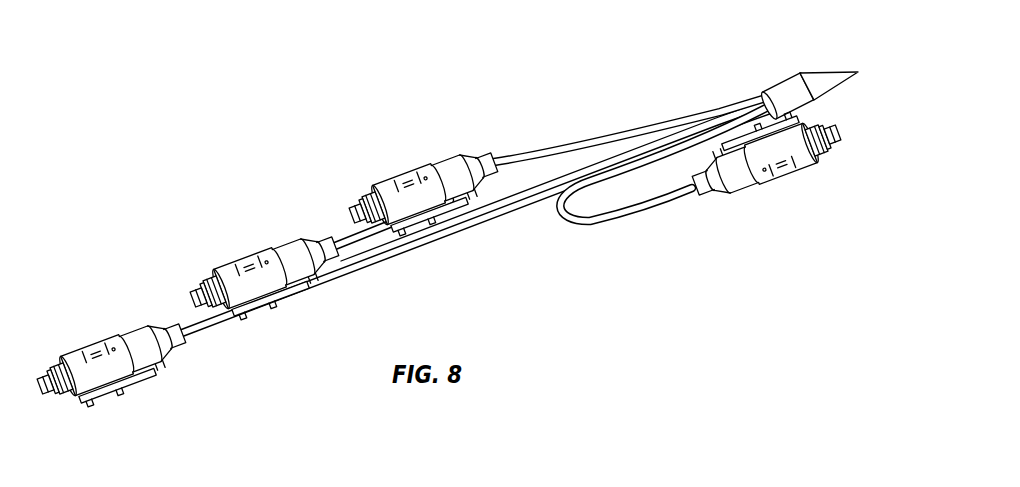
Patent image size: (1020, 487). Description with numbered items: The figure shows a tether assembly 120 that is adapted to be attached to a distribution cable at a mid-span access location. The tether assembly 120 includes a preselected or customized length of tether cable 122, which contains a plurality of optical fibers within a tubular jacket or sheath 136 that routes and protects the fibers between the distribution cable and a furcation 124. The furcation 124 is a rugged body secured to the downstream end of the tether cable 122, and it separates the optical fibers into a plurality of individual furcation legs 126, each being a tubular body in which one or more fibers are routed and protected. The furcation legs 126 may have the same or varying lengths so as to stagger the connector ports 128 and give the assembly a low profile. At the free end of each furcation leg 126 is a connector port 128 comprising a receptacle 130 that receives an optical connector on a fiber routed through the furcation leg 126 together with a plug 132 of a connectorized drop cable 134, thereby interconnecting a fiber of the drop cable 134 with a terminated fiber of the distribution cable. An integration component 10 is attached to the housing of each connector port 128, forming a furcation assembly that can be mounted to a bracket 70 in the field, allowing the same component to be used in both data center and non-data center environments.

The integration component 10 is at (428, 240).
The bracket 70 is at (146, 388).
The tether assembly 120 is at (437, 113).
The tether cable 122 is at (856, 76).
The furcation 124 is at (790, 88).
The furcation leg 126 is at (342, 241).
The connector port 128 is at (77, 348).
The receptacle 130 is at (66, 392).
The plug 132 is at (54, 390).
The drop cable 134 is at (44, 375).
The tubular jacket or sheath 136 is at (809, 173).